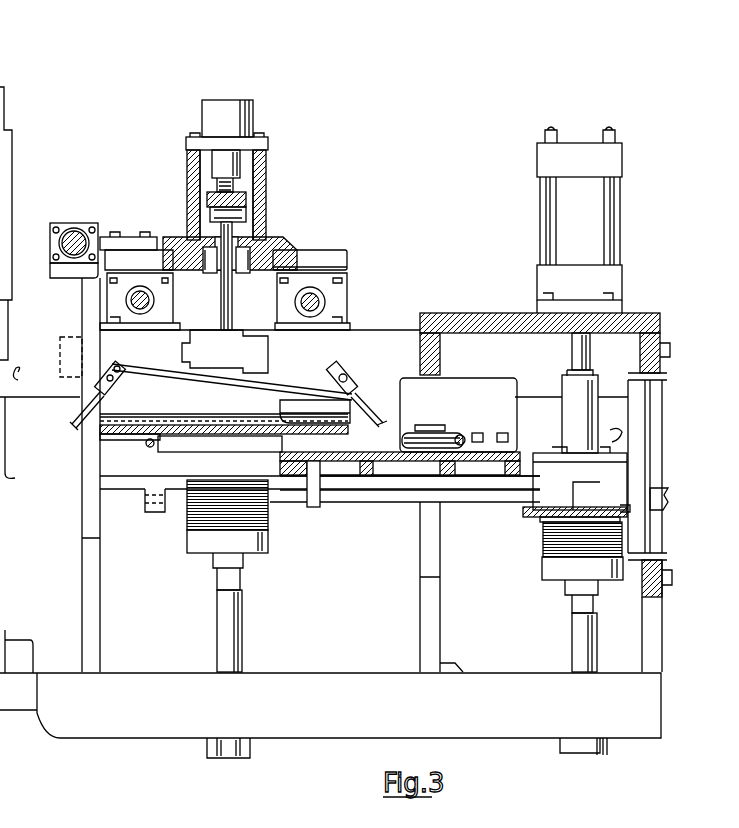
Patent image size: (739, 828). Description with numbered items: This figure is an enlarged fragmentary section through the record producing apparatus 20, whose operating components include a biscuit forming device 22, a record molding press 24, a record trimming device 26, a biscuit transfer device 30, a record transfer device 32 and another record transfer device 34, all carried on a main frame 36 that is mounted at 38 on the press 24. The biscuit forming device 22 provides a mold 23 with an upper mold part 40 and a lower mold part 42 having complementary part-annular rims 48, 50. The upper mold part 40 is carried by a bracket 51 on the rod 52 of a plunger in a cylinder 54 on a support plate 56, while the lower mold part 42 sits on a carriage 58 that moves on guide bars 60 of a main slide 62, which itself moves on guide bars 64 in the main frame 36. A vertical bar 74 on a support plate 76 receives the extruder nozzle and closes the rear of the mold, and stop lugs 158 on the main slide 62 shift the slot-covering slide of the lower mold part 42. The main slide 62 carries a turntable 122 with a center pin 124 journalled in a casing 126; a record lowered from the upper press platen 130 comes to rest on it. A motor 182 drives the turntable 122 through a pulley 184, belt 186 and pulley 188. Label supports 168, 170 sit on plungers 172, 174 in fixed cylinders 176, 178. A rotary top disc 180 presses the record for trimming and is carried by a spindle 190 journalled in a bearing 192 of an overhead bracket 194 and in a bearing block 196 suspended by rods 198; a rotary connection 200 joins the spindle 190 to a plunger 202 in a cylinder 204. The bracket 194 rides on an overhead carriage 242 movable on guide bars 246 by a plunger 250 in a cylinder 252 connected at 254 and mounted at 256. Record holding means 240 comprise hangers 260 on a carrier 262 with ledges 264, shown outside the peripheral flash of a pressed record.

The record producing apparatus 20 is at (120, 122).
The biscuit forming device 22 is at (550, 493).
The mold 23 is at (612, 488).
The record molding press 24 is at (2, 231).
The record trimming device 26 is at (128, 438).
The biscuit transfer device 30 is at (530, 519).
The record transfer device 32 is at (328, 452).
The record transfer device 34 is at (301, 244).
The main frame 36 is at (400, 322).
The mounting 38 is at (15, 700).
The upper mold part 40 is at (587, 470).
The lower mold part 42 is at (606, 510).
The part-annular rim 48 is at (545, 487).
The part-annular rim 50 is at (620, 497).
The bracket 51 is at (585, 430).
The rod 52 is at (575, 378).
The cylinder 54 is at (590, 253).
The support plate 56 is at (490, 318).
The carriage 58 is at (527, 523).
The guide bars 60 is at (413, 498).
The main slide 62 is at (383, 466).
The guide bars 64 is at (124, 480).
The vertical bar 74 is at (638, 435).
The support plate 76 is at (640, 440).
The turntable 122 is at (117, 438).
The center pin 124 is at (215, 428).
The casing 126 is at (193, 459).
The upper press platen 130 is at (2, 355).
The stop lugs 158 is at (312, 506).
The support 168 is at (201, 545).
The support 170 is at (553, 570).
The plunger 172 is at (243, 628).
The plunger 174 is at (575, 650).
The cylinder 176 is at (227, 757).
The cylinder 178 is at (577, 755).
The rotary top disc 180 is at (282, 416).
The motor 182 is at (468, 392).
The pulley 184 is at (448, 432).
The belt 186 is at (410, 430).
The pulley 188 is at (160, 450).
The rotary spindle 190 is at (233, 297).
The bearing 192 is at (274, 240).
The overhead bracket 194 is at (190, 240).
The bearing block 196 is at (182, 352).
The rods 198 is at (222, 320).
The rotary connection 200 is at (245, 205).
The plunger 202 is at (238, 166).
The cylinder 204 is at (240, 124).
The record holding means 240 is at (368, 385).
The overhead carriage 242 is at (336, 249).
The guide bars 246 is at (325, 300).
The plunger 250 is at (128, 237).
The cylinder 252 is at (73, 228).
The connection 254 is at (171, 237).
The mounting 256 is at (72, 281).
The hangers 260 is at (85, 405).
The carrier 262 is at (326, 375).
The ledges 264 is at (74, 428).